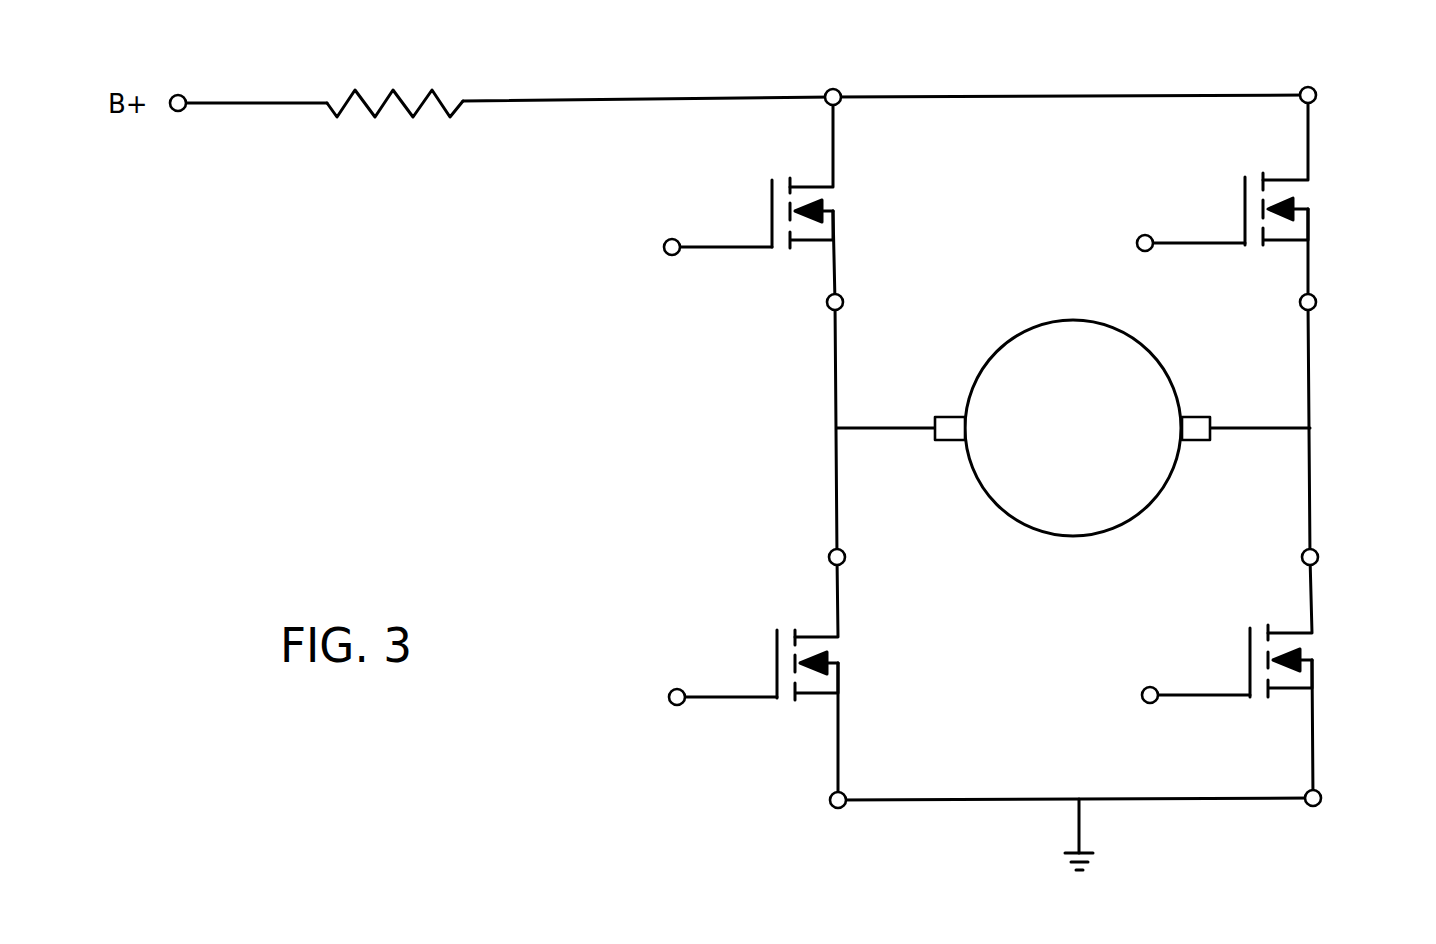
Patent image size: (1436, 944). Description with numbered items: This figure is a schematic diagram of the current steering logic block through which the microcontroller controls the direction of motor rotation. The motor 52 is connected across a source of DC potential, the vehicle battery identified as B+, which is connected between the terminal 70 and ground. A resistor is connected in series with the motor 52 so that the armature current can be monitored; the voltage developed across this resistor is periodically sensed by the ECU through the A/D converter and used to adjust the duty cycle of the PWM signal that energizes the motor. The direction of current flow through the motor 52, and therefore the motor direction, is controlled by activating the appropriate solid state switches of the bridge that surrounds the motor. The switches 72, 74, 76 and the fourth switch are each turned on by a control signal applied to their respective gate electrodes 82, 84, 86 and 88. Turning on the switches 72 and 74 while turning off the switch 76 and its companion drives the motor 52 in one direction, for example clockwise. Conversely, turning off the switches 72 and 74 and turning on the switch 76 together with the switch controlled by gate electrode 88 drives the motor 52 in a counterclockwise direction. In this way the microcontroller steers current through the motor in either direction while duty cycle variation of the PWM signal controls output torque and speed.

The terminal 70 is at (181, 95).
The solid state switch 72 is at (835, 225).
The gate electrode 82 is at (672, 239).
The solid state switch 76 is at (1310, 222).
The gate electrode 86 is at (1145, 236).
The motor 52 is at (992, 500).
The gate electrode 88 is at (677, 689).
The solid state switch 74 is at (1316, 676).
The gate electrode 84 is at (1150, 687).